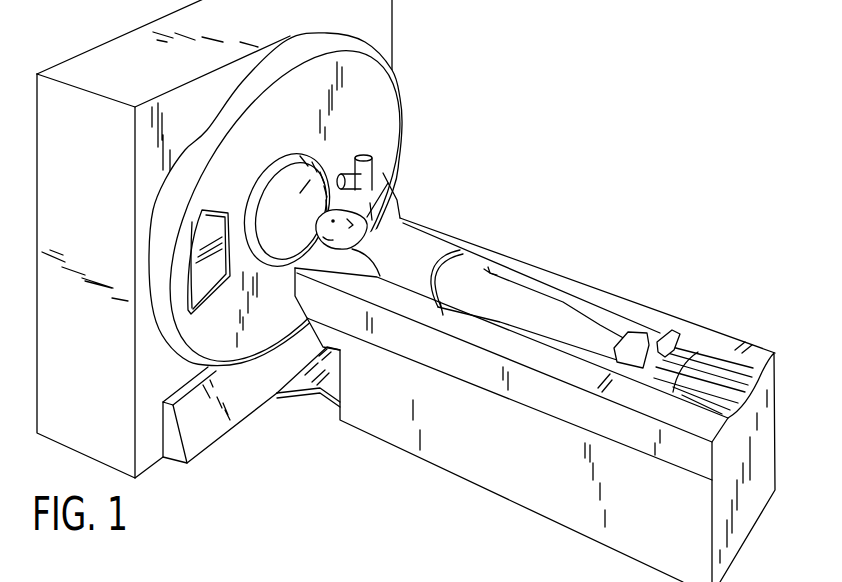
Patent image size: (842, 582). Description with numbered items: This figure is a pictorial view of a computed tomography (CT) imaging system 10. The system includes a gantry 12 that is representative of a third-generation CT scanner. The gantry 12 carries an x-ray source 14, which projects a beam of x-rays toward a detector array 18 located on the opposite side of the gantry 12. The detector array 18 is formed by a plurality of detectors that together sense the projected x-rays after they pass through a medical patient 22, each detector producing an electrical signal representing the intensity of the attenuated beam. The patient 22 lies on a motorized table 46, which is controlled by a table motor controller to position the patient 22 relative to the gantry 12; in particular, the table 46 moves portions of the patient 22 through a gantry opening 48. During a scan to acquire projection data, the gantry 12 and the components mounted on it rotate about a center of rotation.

The computed tomography (CT) imaging system 10 is at (407, 291).
The gantry 12 is at (242, 239).
The x-ray source 14 is at (372, 174).
The detector array 18 is at (203, 288).
The medical patient 22 is at (431, 242).
The motorized table 46 is at (515, 487).
The gantry opening 48 is at (274, 198).